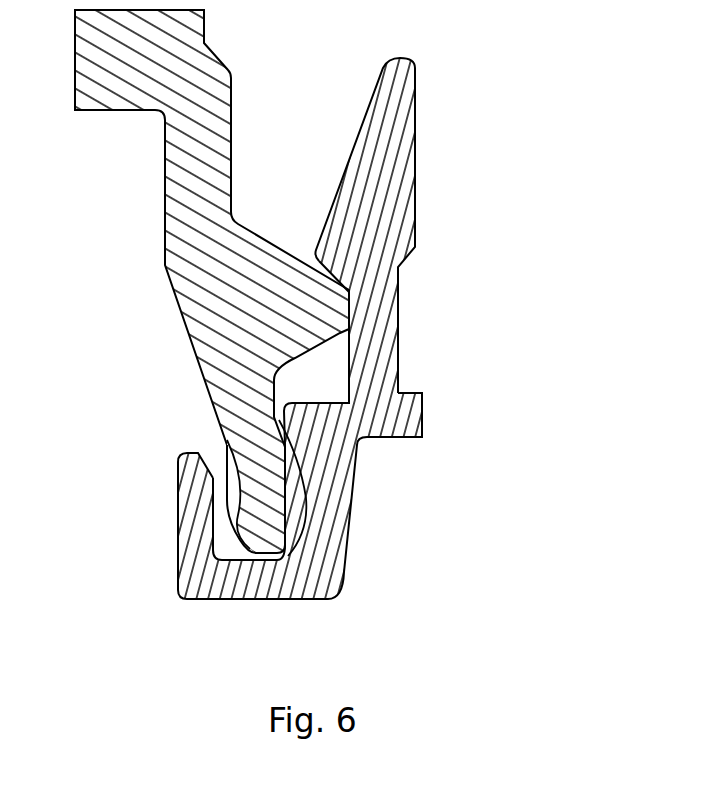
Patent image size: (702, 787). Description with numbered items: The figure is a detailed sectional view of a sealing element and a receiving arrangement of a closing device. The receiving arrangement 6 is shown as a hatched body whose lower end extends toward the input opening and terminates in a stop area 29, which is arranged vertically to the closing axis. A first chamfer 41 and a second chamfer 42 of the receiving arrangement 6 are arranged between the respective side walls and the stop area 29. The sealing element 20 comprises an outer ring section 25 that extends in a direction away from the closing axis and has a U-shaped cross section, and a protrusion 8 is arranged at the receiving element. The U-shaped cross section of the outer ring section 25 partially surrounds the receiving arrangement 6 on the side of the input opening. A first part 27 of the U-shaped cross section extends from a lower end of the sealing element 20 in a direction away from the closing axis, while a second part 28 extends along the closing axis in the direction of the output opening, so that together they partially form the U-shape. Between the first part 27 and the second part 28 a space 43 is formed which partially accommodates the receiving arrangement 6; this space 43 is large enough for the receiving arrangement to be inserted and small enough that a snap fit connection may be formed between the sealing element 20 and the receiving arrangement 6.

The receiving arrangement 6 is at (223, 269).
The sealing element 20 is at (390, 192).
The protrusion 8 is at (300, 487).
The first chamfer 41 is at (226, 440).
The second chamfer 42 is at (293, 520).
The second part of the U-shaped cross section 28 is at (187, 492).
The space 43 is at (225, 537).
The stop area 29 is at (247, 548).
The first part of the U-shaped cross section 27 is at (257, 585).
The outer ring section 25 is at (317, 548).